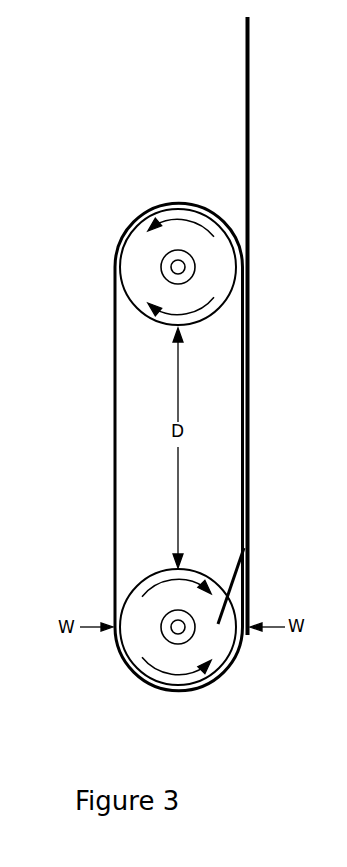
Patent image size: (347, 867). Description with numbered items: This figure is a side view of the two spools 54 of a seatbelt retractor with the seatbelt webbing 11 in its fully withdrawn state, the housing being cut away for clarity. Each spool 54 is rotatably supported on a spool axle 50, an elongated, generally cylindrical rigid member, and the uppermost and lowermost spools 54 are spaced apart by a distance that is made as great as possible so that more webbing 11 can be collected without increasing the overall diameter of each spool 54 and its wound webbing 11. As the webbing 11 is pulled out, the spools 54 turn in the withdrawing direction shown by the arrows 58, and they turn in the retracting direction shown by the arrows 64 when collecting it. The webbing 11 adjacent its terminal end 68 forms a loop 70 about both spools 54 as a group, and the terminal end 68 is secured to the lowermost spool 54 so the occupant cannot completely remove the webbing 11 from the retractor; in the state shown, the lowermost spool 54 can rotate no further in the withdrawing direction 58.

The seatbelt webbing 11 is at (250, 99).
The spool axle 50 is at (186, 274).
The spool 54 is at (142, 243).
The withdrawing direction arrows 58 is at (168, 222).
The retracting direction arrows 64 is at (162, 319).
The terminal end 68 is at (221, 623).
The loop 70 is at (113, 424).